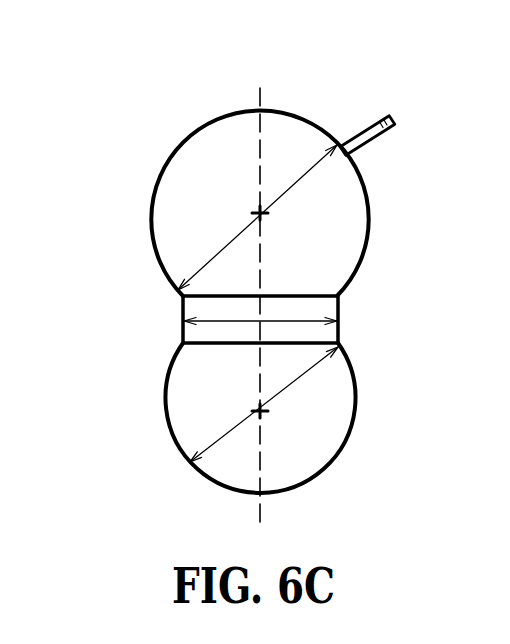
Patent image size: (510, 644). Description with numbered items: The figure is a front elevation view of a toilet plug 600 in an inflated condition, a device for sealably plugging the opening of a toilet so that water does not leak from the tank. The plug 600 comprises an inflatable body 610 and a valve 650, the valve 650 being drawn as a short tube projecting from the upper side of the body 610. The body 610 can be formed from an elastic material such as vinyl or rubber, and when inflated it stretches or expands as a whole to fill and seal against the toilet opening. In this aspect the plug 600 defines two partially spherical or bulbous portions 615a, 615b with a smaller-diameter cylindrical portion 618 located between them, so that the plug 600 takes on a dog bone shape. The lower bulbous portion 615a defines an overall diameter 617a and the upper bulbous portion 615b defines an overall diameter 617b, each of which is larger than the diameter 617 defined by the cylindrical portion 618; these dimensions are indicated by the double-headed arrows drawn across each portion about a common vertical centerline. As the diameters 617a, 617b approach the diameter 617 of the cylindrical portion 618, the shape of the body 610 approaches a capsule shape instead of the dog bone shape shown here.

The toilet plug 600 is at (240, 308).
The valve 650 is at (368, 132).
The overall diameter of second bulbous portion 617b is at (222, 243).
The second bulbous portion 615b is at (153, 250).
The diameter of cylindrical portion 617 is at (288, 318).
The cylindrical portion 618 is at (328, 310).
The overall diameter of first bulbous portion 617a is at (222, 433).
The inflatable body 610 is at (212, 438).
The first bulbous portion 615a is at (208, 478).